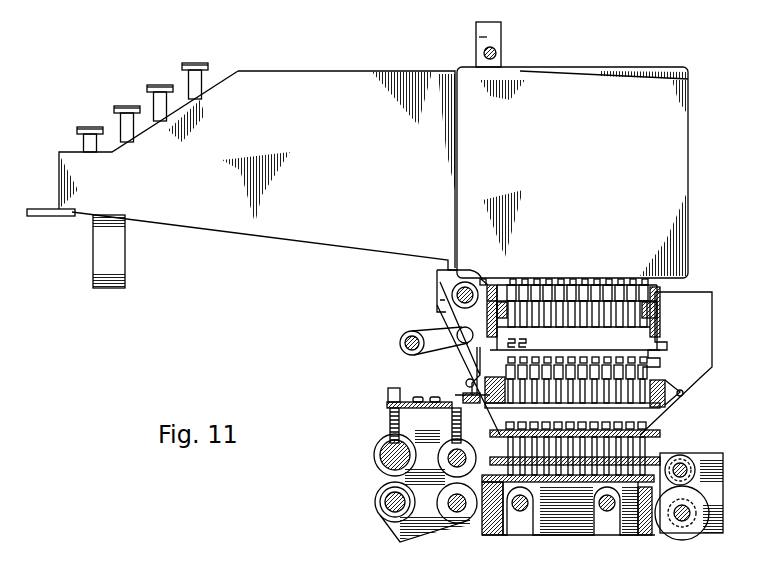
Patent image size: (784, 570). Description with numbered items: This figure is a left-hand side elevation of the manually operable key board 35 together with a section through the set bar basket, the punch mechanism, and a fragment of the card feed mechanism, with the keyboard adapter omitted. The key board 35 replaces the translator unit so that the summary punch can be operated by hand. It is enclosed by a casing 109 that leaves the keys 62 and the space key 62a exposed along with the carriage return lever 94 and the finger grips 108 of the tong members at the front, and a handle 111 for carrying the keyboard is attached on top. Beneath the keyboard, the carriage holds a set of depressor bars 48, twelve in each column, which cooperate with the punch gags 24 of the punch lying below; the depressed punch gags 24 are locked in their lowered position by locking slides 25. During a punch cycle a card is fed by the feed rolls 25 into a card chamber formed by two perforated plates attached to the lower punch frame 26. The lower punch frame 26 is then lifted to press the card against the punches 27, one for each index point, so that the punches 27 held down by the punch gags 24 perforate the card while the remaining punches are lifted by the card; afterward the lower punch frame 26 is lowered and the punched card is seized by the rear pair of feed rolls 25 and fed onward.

The key board 35 is at (304, 126).
The casing 109 is at (314, 81).
The handle 111 is at (499, 38).
The keys 62 is at (182, 67).
The space key 62a is at (97, 118).
The carriage return lever 94 is at (43, 216).
The finger grips 108 is at (117, 246).
The depressor bars 48 is at (549, 283).
The punch gags 24 is at (634, 283).
The punches 27 is at (617, 433).
The lower punch frame 26 is at (585, 538).
The feed rolls 25 is at (655, 347).